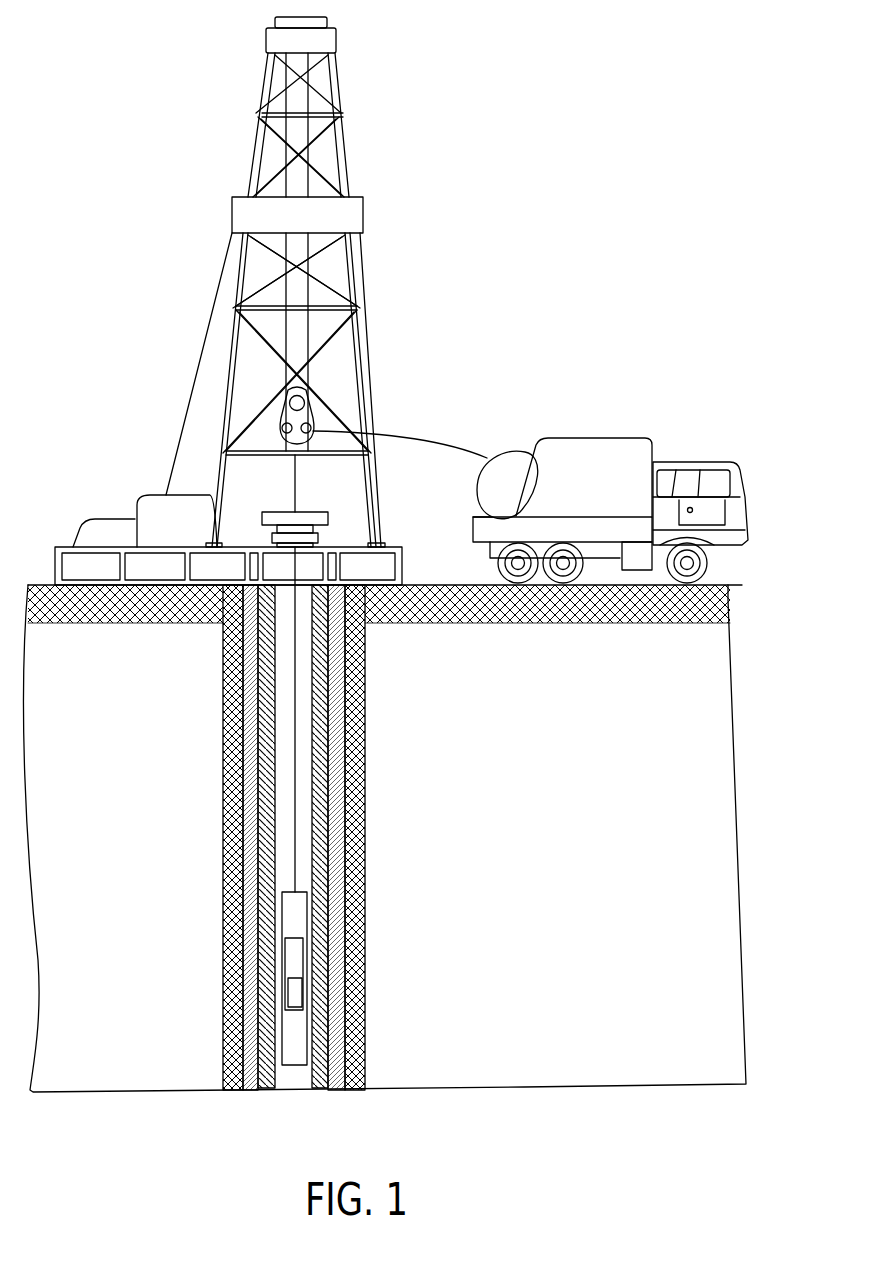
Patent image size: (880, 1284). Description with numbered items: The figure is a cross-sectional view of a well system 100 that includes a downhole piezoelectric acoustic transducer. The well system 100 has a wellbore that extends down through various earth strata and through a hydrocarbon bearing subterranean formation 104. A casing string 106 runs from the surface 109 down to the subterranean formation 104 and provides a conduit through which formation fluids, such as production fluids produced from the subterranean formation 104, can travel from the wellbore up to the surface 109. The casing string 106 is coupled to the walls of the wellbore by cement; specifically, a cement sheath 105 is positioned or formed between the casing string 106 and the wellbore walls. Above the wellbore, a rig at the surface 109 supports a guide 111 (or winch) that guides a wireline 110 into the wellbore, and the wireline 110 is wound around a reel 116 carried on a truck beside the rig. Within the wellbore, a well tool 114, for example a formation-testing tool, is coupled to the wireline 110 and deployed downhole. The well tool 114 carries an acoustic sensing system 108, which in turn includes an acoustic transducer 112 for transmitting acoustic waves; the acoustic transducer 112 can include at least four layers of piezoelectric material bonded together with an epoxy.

The well system 100 is at (560, 297).
The subterranean formation 104 is at (363, 698).
The cement sheath 105 is at (340, 930).
The casing string 106 is at (264, 790).
The acoustic sensing system 108 is at (293, 951).
The surface 109 is at (322, 512).
The wireline 110 is at (431, 447).
The guide 111 is at (305, 401).
The acoustic transducer 112 is at (291, 1001).
The well tool 114 is at (307, 913).
The reel 116 is at (512, 461).